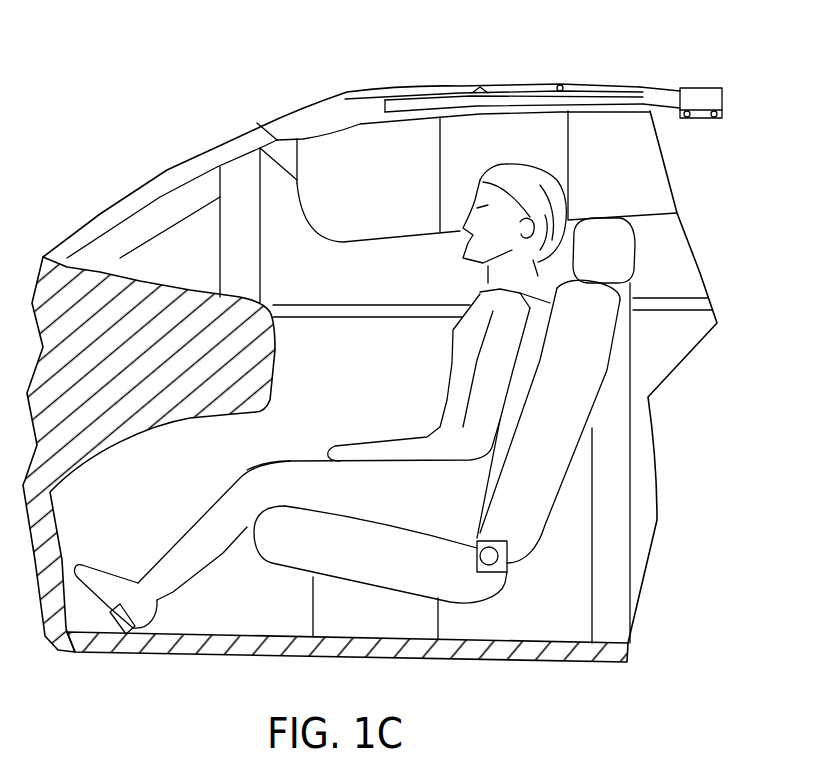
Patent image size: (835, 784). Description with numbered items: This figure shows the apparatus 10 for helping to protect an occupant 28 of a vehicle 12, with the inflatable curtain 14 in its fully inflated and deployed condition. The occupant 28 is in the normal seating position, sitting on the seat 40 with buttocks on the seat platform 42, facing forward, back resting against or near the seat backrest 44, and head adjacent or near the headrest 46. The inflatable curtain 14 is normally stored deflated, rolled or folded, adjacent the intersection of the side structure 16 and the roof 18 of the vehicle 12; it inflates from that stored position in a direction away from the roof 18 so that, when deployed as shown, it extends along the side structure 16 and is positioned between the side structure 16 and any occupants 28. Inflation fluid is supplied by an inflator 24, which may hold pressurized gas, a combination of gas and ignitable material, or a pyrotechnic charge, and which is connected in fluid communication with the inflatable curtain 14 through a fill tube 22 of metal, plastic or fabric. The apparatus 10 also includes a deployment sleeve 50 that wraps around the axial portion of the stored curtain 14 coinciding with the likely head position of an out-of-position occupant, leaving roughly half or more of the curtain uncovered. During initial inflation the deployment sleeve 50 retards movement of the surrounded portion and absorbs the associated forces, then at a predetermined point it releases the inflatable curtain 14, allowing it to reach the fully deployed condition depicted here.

The apparatus 10 is at (562, 63).
The vehicle 12 is at (136, 145).
The inflatable curtain 14 is at (355, 226).
The side structure 16 is at (622, 400).
The roof 18 is at (300, 112).
The fill tube 22 is at (665, 98).
The inflator 24 is at (708, 97).
The occupant 28 is at (460, 363).
The seat 40 is at (540, 528).
The seat platform 42 is at (352, 565).
The seat backrest 44 is at (567, 428).
The headrest 46 is at (622, 248).
The deployment sleeve 50 is at (482, 130).